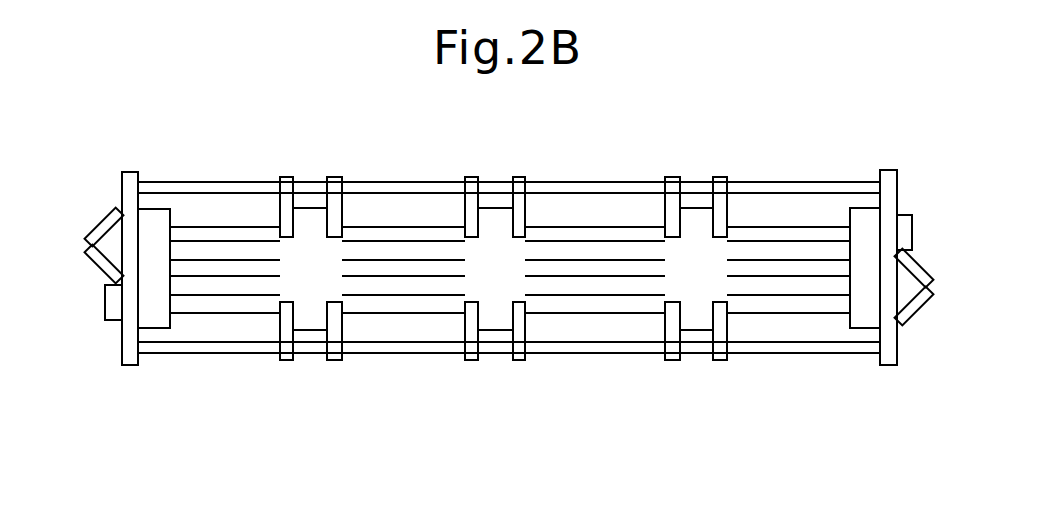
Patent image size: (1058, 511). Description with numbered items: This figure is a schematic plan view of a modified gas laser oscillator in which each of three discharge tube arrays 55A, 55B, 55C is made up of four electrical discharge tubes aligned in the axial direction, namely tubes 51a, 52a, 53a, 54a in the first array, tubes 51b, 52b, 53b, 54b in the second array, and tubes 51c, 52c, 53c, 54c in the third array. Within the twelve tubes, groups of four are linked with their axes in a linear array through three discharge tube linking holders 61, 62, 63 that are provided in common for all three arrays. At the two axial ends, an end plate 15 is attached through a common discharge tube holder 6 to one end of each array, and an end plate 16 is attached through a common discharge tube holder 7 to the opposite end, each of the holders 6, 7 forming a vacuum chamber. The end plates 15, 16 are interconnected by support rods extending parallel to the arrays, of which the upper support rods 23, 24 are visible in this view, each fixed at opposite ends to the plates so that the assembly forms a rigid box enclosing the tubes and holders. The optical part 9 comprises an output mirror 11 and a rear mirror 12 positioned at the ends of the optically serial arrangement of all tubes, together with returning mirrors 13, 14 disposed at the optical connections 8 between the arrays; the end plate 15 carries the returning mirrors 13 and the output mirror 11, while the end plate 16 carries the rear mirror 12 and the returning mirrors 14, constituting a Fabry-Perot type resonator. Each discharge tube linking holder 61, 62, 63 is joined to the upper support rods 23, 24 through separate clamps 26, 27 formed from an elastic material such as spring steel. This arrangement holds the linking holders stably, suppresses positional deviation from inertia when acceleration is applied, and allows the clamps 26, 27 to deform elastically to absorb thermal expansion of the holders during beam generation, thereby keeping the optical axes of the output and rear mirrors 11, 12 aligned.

The discharge tube holder 6 is at (162, 209).
The discharge tube holder 7 is at (863, 218).
The optical connections 8 is at (100, 250).
The optical part 9 is at (933, 208).
The output mirror 11 is at (113, 313).
The rear mirror 12 is at (908, 222).
The returning mirrors 13 is at (112, 208).
The returning mirrors 14 is at (927, 262).
The end plate 15 is at (132, 366).
The end plate 16 is at (887, 366).
The support rod 23 is at (409, 190).
The support rod 24 is at (427, 355).
The clamp 26 is at (519, 277).
The clamp 27 is at (520, 360).
The electrical discharge tube 51a is at (205, 232).
The electrical discharge tube 51b is at (222, 262).
The electrical discharge tube 51c is at (203, 305).
The electrical discharge tube 52a is at (368, 233).
The electrical discharge tube 52b is at (408, 268).
The electrical discharge tube 52c is at (370, 307).
The electrical discharge tube 53a is at (552, 233).
The electrical discharge tube 53b is at (592, 267).
The electrical discharge tube 53c is at (583, 305).
The electrical discharge tube 54a is at (755, 233).
The electrical discharge tube 54b is at (782, 268).
The electrical discharge tube 54c is at (762, 305).
The discharge tube array 55A is at (190, 216).
The discharge tube array 55B is at (252, 290).
The discharge tube array 55C is at (184, 322).
The discharge tube linking holder 61 is at (312, 222).
The discharge tube linking holder 62 is at (493, 217).
The discharge tube linking holder 63 is at (694, 218).